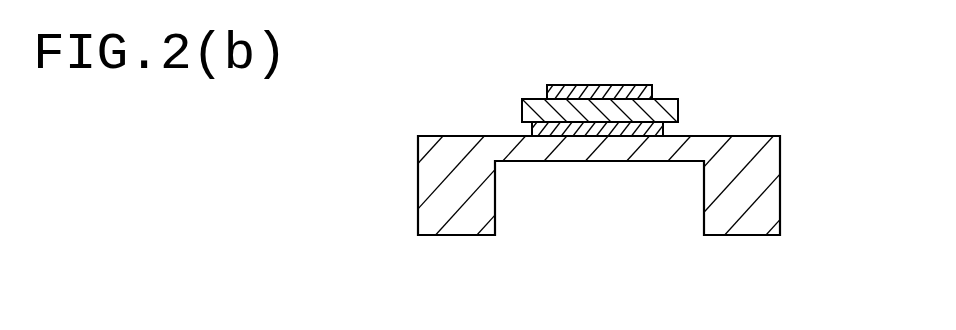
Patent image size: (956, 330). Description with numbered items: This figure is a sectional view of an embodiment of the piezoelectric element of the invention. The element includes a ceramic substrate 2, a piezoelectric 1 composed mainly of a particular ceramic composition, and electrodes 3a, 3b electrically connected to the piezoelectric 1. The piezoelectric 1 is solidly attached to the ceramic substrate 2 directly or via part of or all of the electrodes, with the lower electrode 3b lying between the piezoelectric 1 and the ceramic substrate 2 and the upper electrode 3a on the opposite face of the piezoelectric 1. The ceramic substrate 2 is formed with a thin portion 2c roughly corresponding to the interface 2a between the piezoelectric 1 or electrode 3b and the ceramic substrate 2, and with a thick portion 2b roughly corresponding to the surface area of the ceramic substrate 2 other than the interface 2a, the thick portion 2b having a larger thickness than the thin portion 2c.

The piezoelectric 1 is at (663, 111).
The ceramic substrate 2 is at (388, 135).
The interface 2a is at (623, 135).
The thick portion 2b is at (462, 225).
The thin portion 2c is at (568, 163).
The electrode 3a is at (622, 89).
The electrode 3b is at (548, 128).